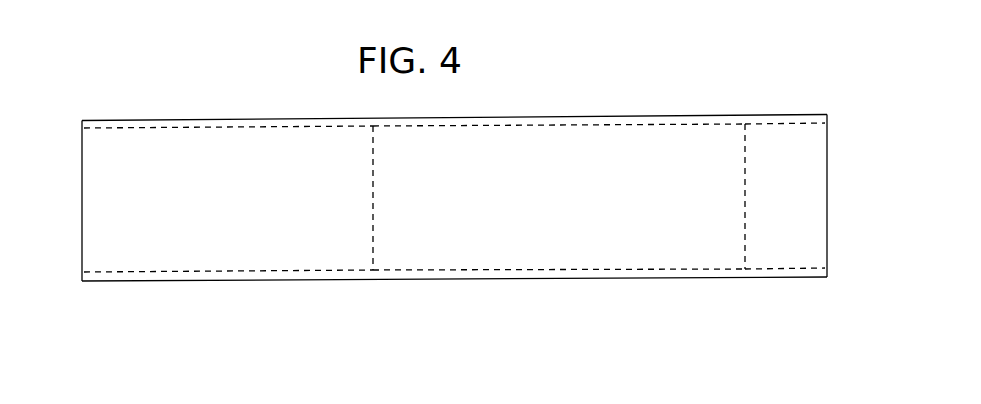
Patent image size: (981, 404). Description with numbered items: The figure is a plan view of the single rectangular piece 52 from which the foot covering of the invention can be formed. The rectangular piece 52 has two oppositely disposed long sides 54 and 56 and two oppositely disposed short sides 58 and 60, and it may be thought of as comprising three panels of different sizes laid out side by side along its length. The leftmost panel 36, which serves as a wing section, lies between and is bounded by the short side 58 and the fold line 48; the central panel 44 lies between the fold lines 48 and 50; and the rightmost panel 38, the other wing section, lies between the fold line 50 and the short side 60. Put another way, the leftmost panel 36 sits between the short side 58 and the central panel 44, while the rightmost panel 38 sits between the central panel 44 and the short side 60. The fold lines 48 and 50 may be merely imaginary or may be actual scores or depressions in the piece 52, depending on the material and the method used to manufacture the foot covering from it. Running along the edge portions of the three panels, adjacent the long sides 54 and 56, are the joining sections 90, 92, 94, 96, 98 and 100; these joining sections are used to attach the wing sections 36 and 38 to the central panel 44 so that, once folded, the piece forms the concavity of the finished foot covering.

The leftmost panel (wing section) 36 is at (238, 209).
The rightmost panel (wing section) 38 is at (801, 204).
The central panel 44 is at (570, 207).
The fold line 48 is at (373, 207).
The fold line 50 is at (743, 202).
The rectangular piece 52 is at (133, 321).
The long side 54 is at (102, 120).
The long side 56 is at (97, 284).
The short side (edge) 58 is at (82, 198).
The short side (edge) 60 is at (827, 197).
The joining section 90 is at (270, 122).
The joining section 92 is at (576, 120).
The joining section 94 is at (778, 118).
The joining section 96 is at (230, 273).
The joining section 98 is at (565, 273).
The joining section 100 is at (777, 270).